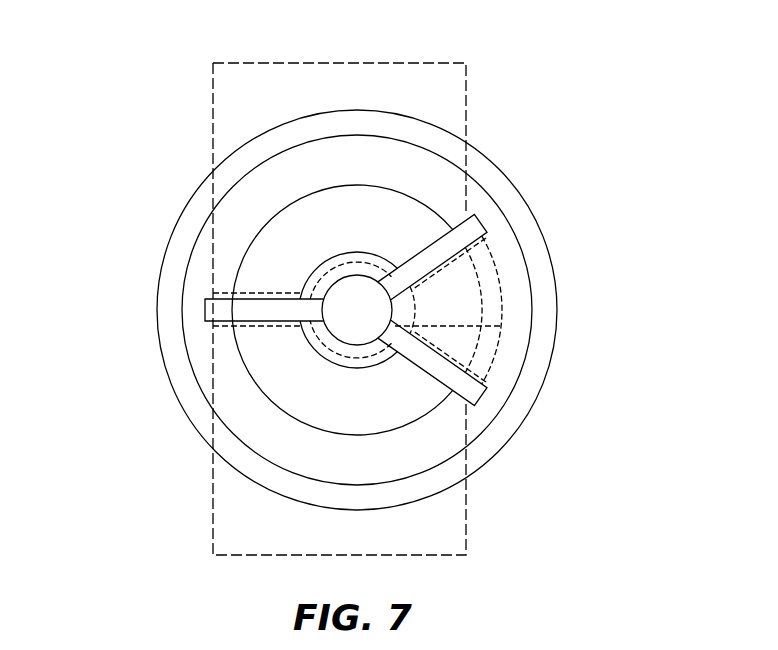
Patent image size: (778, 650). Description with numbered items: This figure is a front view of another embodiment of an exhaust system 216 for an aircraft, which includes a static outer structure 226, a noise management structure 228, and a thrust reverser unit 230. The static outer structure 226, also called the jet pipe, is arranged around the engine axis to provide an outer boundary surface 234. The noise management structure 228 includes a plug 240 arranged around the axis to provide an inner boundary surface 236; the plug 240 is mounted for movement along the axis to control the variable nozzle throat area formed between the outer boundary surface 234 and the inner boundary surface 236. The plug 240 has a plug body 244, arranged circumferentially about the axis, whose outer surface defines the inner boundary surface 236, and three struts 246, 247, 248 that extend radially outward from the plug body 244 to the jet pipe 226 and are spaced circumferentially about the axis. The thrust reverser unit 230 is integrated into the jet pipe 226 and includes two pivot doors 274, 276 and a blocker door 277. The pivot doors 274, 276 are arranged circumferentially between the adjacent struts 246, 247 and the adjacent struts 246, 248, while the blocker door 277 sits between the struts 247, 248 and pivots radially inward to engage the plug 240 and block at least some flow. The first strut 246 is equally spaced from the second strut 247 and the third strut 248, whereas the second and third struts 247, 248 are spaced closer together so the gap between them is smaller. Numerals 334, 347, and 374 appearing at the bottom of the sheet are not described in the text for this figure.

The exhaust system 216 is at (170, 72).
The static outer structure 226 is at (517, 170).
The noise management structure 228 is at (283, 277).
The thrust reverser unit 230 is at (193, 118).
The outer boundary surface 234 is at (373, 157).
The inner boundary surface 236 is at (350, 255).
The plug 240 is at (405, 393).
The plug body 244 is at (303, 360).
The first strut 246 is at (200, 317).
The second strut 247 is at (493, 217).
The third strut 248 is at (490, 397).
The pivot door 274 is at (200, 170).
The pivot door 276 is at (207, 422).
The blocker door 277 is at (512, 290).
The component of adjacent figure 334 is at (468, 643).
The component of adjacent figure 347 is at (645, 649).
The component of adjacent figure 374 is at (555, 648).